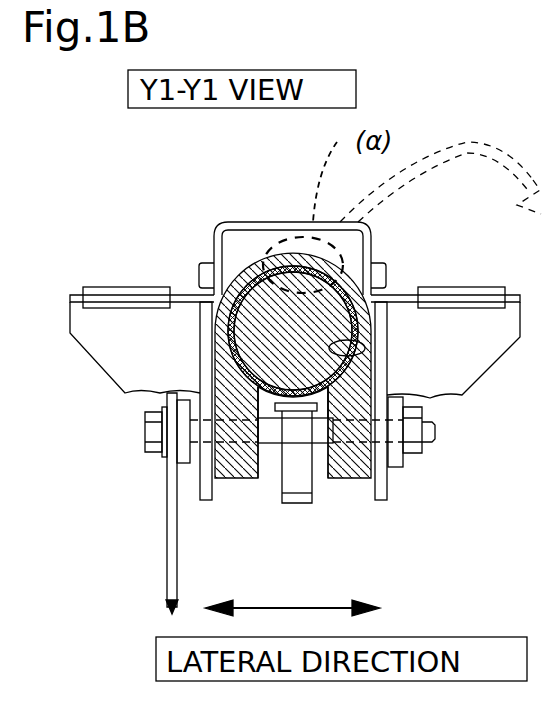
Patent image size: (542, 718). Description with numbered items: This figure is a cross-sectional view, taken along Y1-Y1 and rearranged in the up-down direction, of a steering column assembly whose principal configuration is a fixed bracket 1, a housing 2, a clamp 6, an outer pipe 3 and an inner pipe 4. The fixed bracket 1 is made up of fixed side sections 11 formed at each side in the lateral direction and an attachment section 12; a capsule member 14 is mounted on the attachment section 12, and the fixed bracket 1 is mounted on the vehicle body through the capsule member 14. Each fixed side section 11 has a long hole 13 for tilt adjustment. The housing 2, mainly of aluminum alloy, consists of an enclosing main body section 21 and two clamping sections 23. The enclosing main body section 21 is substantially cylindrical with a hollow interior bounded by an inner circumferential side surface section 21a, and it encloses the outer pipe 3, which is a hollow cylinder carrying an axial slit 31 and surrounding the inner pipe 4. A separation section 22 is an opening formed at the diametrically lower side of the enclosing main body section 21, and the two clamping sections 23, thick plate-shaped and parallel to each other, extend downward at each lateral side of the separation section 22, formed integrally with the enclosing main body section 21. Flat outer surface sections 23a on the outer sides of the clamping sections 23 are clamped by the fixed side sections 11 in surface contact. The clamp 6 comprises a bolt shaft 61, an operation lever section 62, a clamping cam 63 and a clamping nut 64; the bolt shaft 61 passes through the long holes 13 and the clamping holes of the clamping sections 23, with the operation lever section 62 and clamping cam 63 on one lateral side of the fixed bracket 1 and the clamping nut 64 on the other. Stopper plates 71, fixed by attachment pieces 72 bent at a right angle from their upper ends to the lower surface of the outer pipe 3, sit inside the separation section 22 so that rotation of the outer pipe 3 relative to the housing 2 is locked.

The fixed bracket 1 is at (295, 414).
The housing 2 is at (356, 265).
The outer pipe 3 is at (284, 410).
The inner pipe 4 is at (263, 372).
The clamp 6 is at (293, 503).
The fixed side sections 11 is at (208, 368).
The attachment section 12 is at (182, 294).
The long holes for tilt adjustment 13 is at (158, 445).
The capsule member 14 is at (138, 287).
The enclosing main body section 21 is at (243, 270).
The inner circumferential side surface section 21a is at (365, 350).
The separation section 22 is at (263, 457).
The clamping sections 23 is at (231, 478).
The flat outer surface sections 23a is at (142, 390).
The slit 31 is at (287, 253).
The bolt shaft 61 is at (305, 442).
The operation lever section 62 is at (168, 536).
The clamping cam 63 is at (185, 460).
The clamping nut 64 is at (415, 450).
The stopper plates 71 is at (297, 503).
The attachment pieces 72 is at (292, 440).